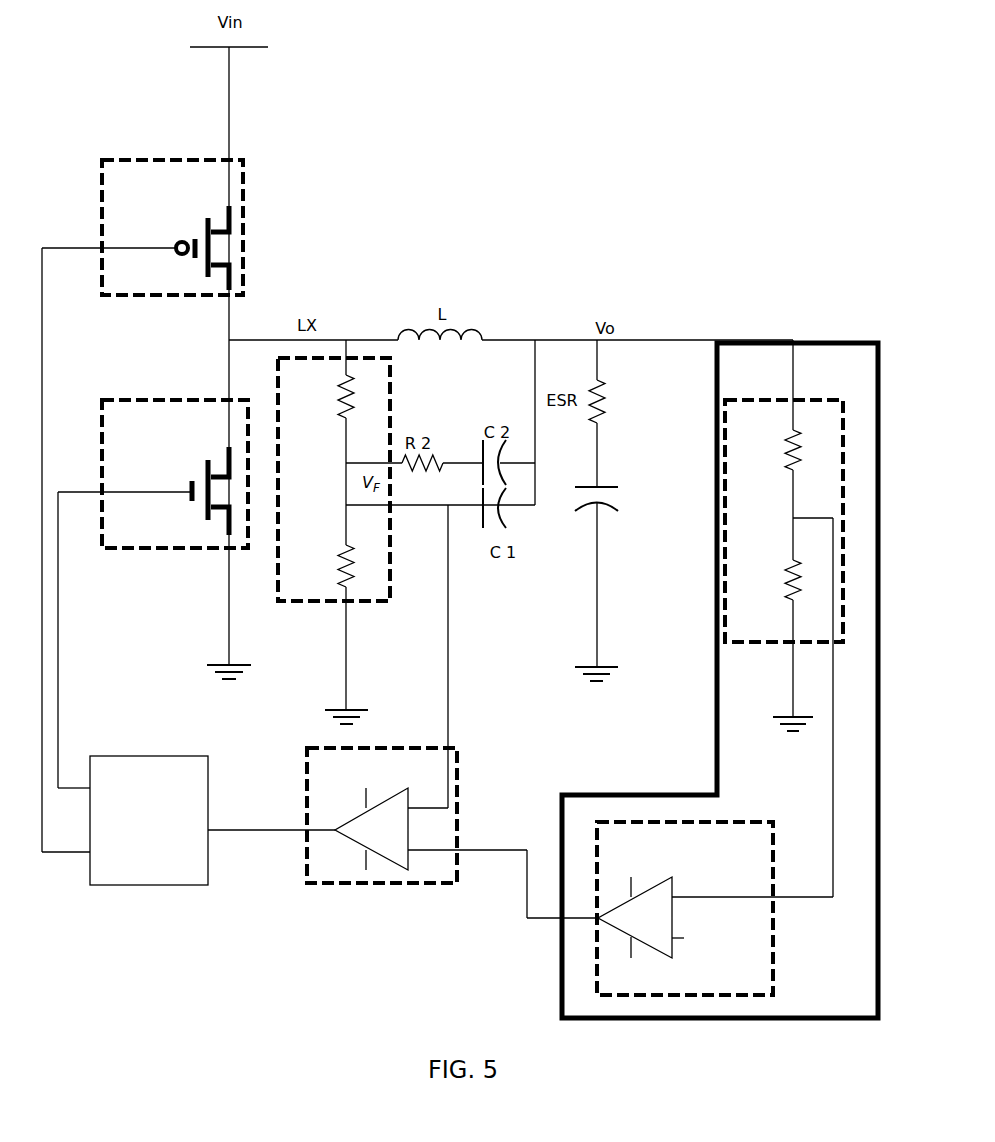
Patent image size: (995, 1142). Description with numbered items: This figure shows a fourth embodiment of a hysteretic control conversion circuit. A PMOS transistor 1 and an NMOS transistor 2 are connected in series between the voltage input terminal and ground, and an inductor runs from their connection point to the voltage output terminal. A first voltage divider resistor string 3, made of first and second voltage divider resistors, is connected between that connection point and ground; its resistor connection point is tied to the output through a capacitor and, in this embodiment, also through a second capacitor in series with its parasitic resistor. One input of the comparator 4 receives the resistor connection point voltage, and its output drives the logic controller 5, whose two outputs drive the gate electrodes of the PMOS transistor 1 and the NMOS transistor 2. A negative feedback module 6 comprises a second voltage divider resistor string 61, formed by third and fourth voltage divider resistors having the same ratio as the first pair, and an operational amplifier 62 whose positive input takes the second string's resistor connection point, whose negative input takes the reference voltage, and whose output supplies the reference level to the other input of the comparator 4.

The PMOS transistor 1 is at (238, 192).
The NMOS transistor 2 is at (232, 448).
The first voltage divider resistor string 3 is at (372, 388).
The comparator 4 is at (452, 830).
The logic controller 5 is at (203, 786).
The negative feedback module 6 is at (862, 390).
The second voltage divider resistor string 61 is at (826, 412).
The operational amplifier 62 is at (752, 980).